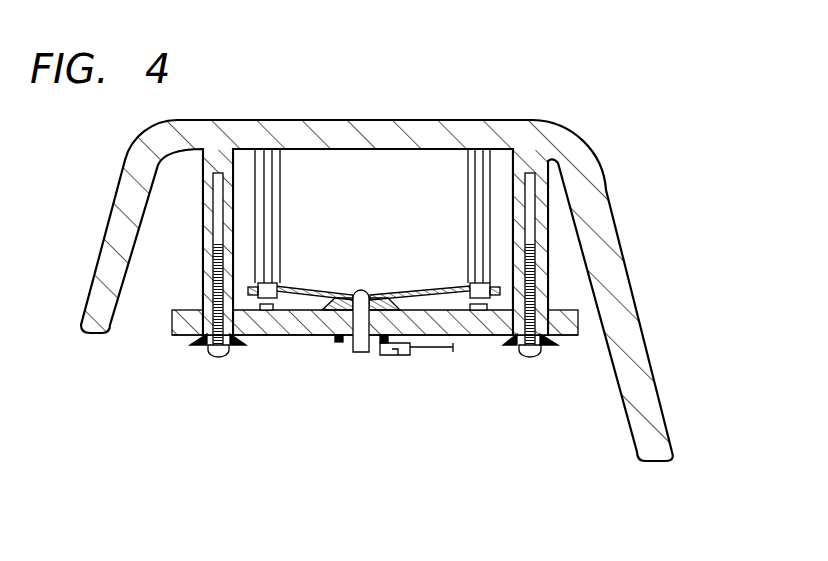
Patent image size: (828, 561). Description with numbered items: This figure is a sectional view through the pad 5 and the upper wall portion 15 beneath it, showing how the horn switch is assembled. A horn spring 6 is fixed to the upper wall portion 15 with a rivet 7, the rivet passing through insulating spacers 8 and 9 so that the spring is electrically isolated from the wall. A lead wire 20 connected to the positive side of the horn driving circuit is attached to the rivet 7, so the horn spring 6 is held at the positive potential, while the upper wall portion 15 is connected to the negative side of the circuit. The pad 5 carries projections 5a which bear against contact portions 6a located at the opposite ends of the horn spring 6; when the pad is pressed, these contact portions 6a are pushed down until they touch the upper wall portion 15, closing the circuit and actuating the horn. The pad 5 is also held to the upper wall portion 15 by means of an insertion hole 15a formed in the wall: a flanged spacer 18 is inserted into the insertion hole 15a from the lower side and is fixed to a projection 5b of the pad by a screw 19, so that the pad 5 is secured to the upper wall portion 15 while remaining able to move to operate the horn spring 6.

The pad 5 is at (599, 124).
The projections 5a is at (263, 180).
The projections 5b is at (205, 192).
The horn spring 6 is at (307, 290).
The contact portions 6a is at (265, 287).
The rivet 7 is at (360, 290).
The insulating spacer 8 is at (322, 309).
The insulating spacer 9 is at (338, 342).
The upper wall portion 15 is at (557, 322).
The insertion hole 15a is at (177, 310).
The flanged spacers 18 is at (190, 340).
The screws 19 is at (215, 353).
The lead wire 20 is at (440, 352).